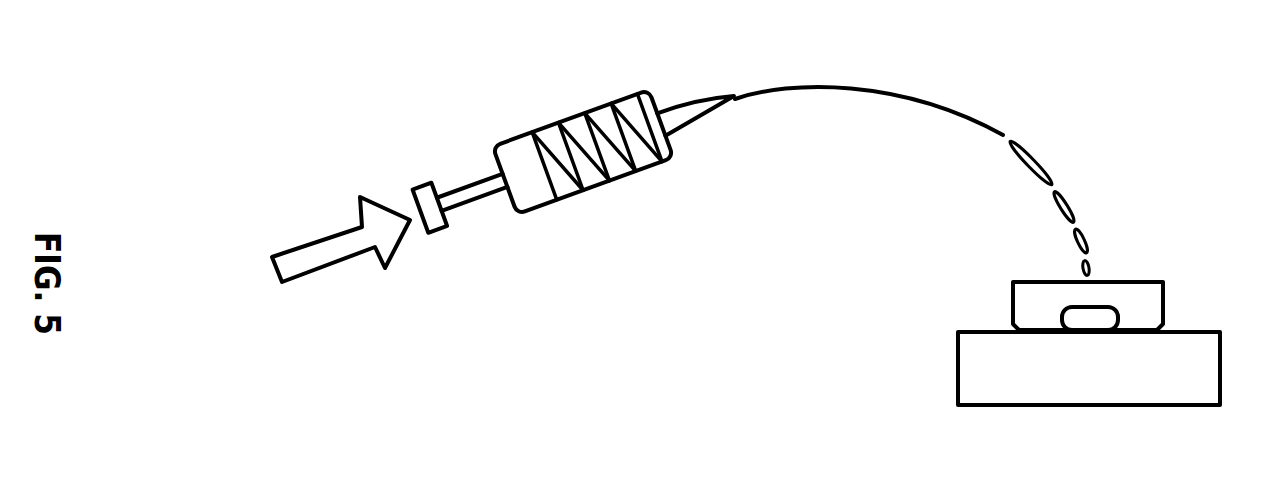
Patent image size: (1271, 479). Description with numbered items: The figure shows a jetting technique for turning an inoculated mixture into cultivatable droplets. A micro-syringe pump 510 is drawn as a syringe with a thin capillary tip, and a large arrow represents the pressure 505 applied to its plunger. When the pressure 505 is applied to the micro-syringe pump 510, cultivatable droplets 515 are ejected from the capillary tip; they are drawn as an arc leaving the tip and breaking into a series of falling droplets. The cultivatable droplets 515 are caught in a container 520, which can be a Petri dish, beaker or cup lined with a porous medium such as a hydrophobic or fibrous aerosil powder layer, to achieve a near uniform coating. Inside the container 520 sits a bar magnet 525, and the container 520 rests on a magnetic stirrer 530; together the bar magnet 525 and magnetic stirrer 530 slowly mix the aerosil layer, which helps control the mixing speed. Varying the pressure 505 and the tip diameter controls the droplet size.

The pressure 505 is at (332, 262).
The micro-syringe pump 510 is at (567, 118).
The cultivatable droplets 515 is at (1030, 160).
The container 520 is at (1162, 282).
The bar magnet 525 is at (1062, 322).
The magnetic stirrer 530 is at (1089, 368).